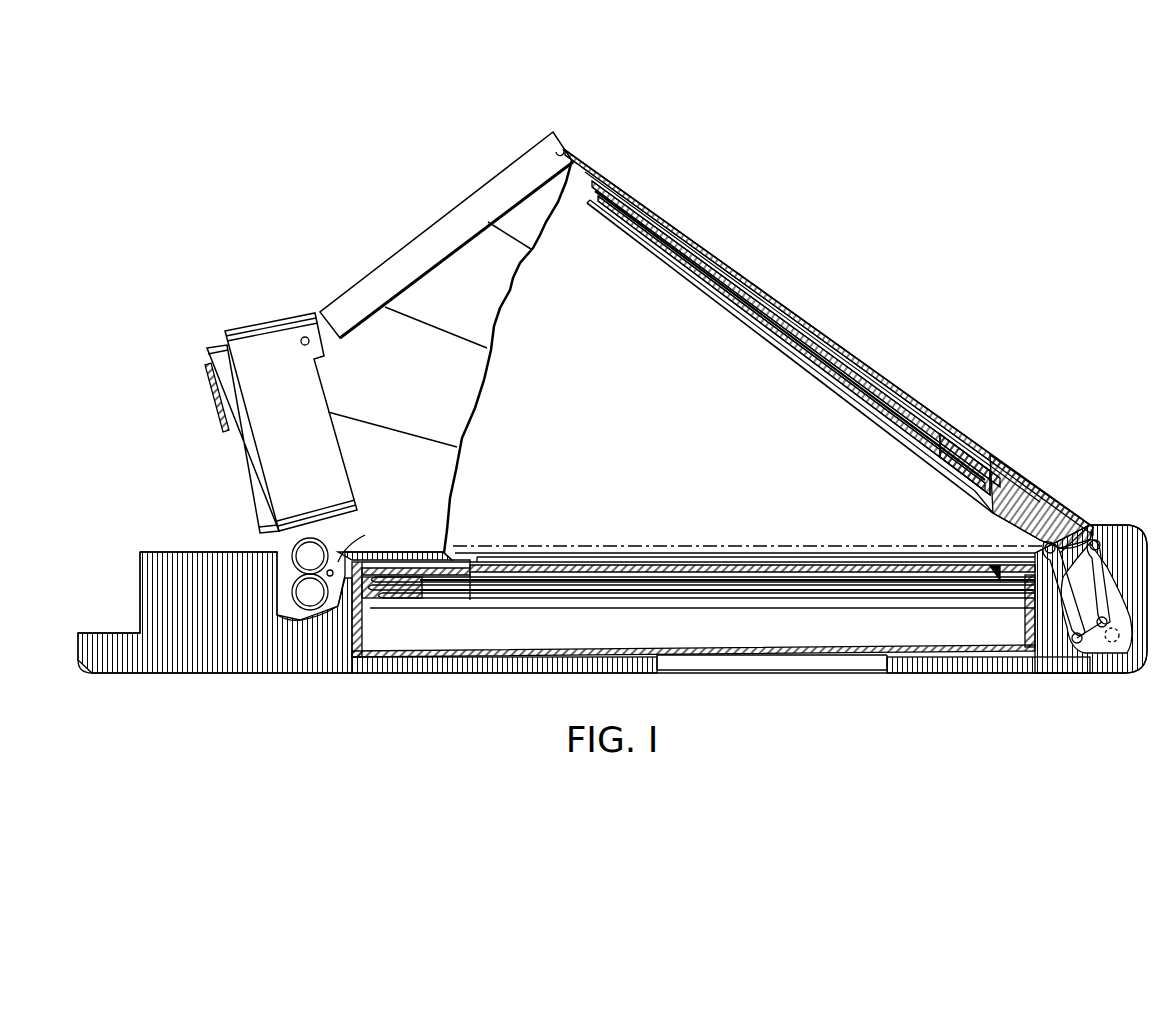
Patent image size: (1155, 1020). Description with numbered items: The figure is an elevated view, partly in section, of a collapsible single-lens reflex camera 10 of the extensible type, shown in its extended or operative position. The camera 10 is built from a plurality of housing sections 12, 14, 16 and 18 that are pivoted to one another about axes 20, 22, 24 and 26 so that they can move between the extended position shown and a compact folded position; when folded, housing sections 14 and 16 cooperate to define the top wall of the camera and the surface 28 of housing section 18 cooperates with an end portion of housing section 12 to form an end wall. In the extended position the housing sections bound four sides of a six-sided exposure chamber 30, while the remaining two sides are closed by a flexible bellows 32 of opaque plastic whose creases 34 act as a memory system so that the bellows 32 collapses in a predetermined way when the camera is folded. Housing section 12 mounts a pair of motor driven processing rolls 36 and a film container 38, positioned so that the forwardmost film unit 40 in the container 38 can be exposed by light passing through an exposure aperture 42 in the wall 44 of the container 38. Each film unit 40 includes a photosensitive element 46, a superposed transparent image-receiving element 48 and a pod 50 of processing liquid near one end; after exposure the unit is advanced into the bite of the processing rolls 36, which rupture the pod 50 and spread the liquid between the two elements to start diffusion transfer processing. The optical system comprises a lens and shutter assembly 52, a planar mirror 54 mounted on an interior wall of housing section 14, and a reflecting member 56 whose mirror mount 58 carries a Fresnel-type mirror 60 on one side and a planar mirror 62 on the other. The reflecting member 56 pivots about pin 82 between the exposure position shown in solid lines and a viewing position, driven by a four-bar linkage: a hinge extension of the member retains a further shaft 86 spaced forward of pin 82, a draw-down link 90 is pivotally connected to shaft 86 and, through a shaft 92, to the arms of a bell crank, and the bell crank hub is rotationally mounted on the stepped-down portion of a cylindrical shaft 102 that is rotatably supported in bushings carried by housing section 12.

The camera 10 is at (600, 130).
The housing section 12 is at (735, 674).
The housing section 14 is at (828, 340).
The housing section 16 is at (445, 226).
The housing section 18 is at (246, 343).
The pivot axis 20 is at (1106, 535).
The pivot axis 22 is at (565, 148).
The pivot axis 24 is at (307, 336).
The pivot axis 26 is at (340, 560).
The surface 28 is at (266, 372).
The exposure chamber 30 is at (573, 356).
The flexible bellows 32 is at (545, 295).
The creases 34 is at (500, 235).
The processing rolls 36 is at (292, 580).
The film container 38 is at (364, 618).
The film unit 40 is at (552, 568).
The exposure aperture 42 is at (512, 562).
The wall 44 is at (483, 563).
The photosensitive element 46 is at (634, 590).
The image-receiving element 48 is at (685, 598).
The pod 50 is at (435, 596).
The lens and shutter assembly 52 is at (207, 405).
The mirror 54 is at (747, 295).
The reflecting member 56 is at (808, 384).
The mirror mount 58 is at (1000, 497).
The Fresnel-type mirror 60 is at (690, 262).
The planar mirror 62 is at (693, 287).
The pin 82 is at (1096, 540).
The shaft 86 is at (1052, 540).
The draw-down link 90 is at (1120, 665).
The shaft 92 is at (1100, 628).
The cylindrical shaft 102 is at (1072, 643).